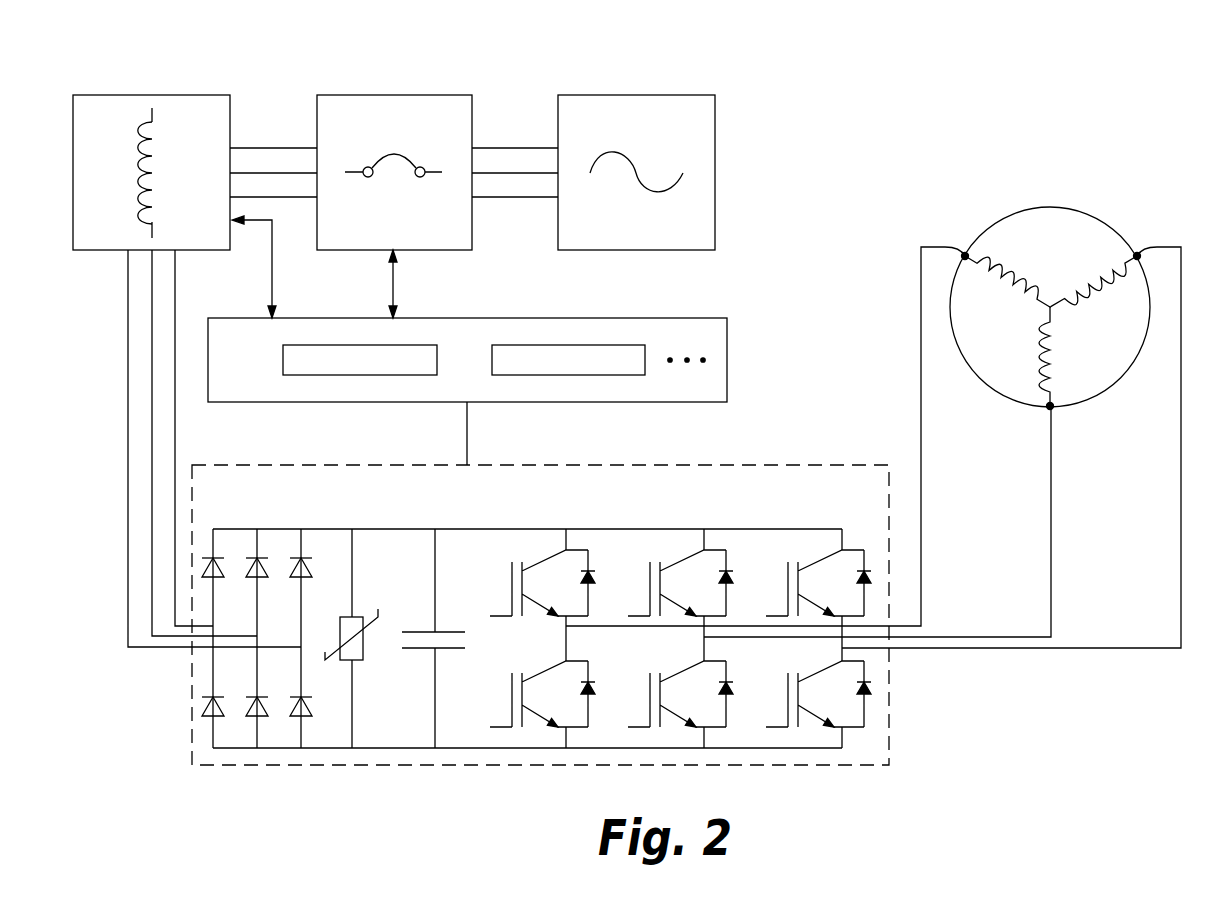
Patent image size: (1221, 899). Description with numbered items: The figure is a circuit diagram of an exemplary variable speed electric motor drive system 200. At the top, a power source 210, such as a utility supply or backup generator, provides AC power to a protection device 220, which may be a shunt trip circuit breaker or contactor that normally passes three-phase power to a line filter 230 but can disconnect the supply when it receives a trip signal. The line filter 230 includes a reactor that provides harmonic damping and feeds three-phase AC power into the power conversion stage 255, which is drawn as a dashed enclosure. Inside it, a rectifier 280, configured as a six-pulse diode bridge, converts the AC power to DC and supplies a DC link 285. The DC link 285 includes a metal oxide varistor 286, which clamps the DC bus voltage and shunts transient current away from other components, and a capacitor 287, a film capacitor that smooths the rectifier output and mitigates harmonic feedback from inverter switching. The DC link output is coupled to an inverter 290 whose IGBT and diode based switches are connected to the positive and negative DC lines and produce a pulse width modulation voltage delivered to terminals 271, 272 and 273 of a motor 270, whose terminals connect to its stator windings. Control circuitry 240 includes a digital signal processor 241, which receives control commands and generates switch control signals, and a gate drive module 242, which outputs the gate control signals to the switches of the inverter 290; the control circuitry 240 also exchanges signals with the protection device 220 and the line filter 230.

The variable speed electric motor drive system 200 is at (878, 100).
The power source 210 is at (597, 95).
The protection device 220 is at (373, 95).
The line filter 230 is at (137, 95).
The control circuitry 240 is at (513, 356).
The digital signal processor 241 is at (297, 344).
The gate drive module 242 is at (492, 350).
The power converter 255 is at (752, 459).
The motor 270 is at (1063, 293).
The motor terminal 271 is at (965, 254).
The motor terminal 272 is at (1052, 409).
The motor terminal 273 is at (1139, 254).
The rectifier 280 is at (318, 518).
The DC link 285 is at (397, 612).
The metal oxide varistor 286 is at (352, 617).
The capacitor 287 is at (435, 650).
The inverter 290 is at (870, 518).